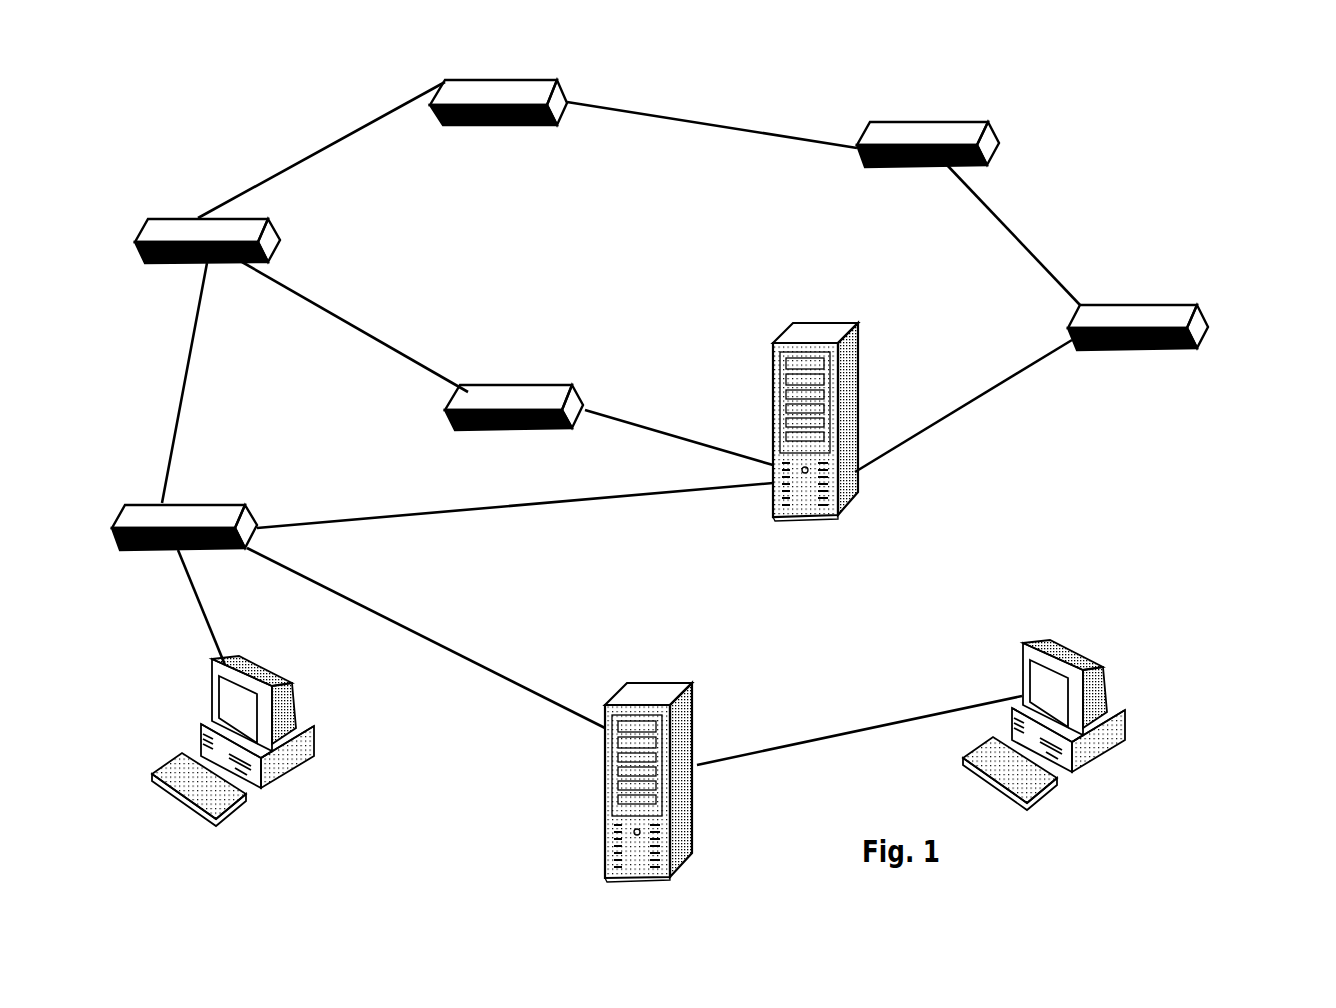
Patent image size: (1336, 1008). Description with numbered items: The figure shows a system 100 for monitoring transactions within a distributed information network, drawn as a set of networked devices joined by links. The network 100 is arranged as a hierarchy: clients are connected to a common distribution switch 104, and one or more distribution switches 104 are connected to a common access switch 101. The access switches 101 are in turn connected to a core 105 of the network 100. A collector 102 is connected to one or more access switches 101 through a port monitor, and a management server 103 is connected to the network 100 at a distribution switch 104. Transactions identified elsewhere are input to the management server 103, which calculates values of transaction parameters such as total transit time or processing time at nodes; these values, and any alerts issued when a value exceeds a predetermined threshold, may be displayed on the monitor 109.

The system 100 is at (1128, 144).
The access switch 101 is at (162, 223).
The collector 102 is at (900, 405).
The management server 103 is at (668, 692).
The distribution switch 104 is at (1205, 322).
The core 105 is at (531, 80).
The monitor 109 is at (1103, 675).